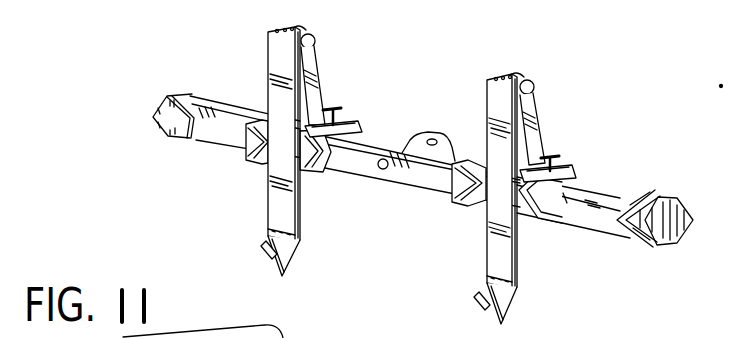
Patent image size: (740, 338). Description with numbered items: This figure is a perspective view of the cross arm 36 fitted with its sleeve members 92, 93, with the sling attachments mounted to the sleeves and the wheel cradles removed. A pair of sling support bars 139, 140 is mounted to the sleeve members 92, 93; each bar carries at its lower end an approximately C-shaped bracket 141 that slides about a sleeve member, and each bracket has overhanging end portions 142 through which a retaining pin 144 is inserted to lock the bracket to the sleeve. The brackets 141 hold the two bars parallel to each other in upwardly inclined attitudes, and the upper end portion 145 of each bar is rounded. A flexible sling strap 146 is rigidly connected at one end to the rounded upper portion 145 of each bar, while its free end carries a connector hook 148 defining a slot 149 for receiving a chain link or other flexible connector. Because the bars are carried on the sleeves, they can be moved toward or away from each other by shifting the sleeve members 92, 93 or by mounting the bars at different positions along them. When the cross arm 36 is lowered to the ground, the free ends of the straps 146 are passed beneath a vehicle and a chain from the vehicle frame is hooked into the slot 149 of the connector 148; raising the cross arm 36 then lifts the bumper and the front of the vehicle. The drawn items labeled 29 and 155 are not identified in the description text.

The deck panel 29 is at (214, 327).
The cross arm 36 is at (371, 179).
The sleeve member 92 is at (604, 184).
The sleeve member 93 is at (262, 152).
The sling support bar 139 is at (533, 122).
The sling support bar 140 is at (313, 83).
The bracket 141 is at (300, 168).
The overhanging end portions 142 is at (361, 127).
The retaining pin 144 is at (341, 110).
The upper end portion 145 is at (315, 46).
The flexible sling strap 146 is at (268, 68).
The connector hook 148 is at (292, 262).
The slot 149 is at (262, 244).
The pivot pin 155 is at (384, 170).